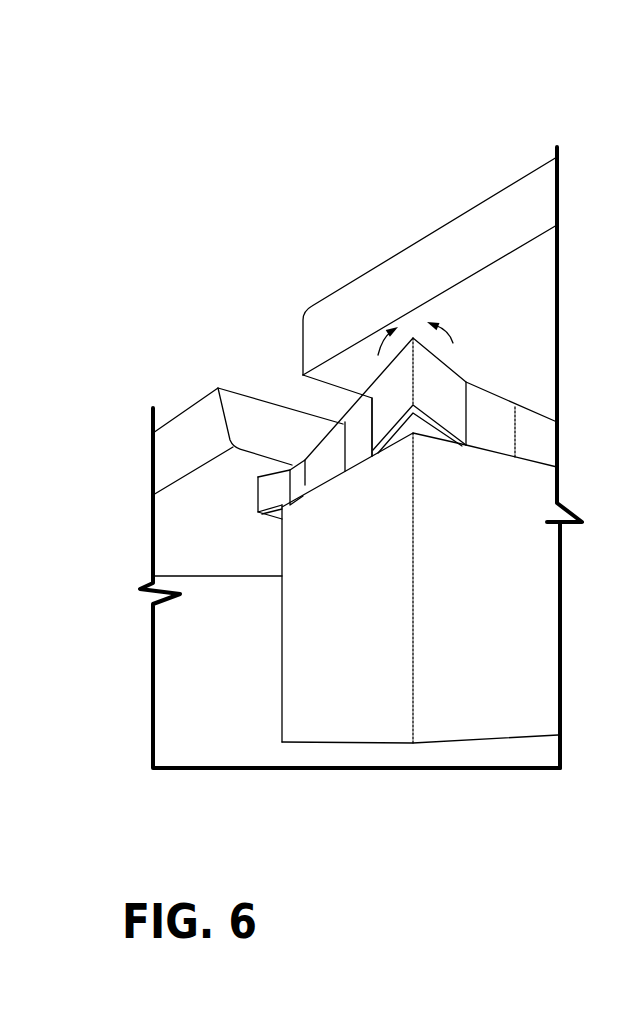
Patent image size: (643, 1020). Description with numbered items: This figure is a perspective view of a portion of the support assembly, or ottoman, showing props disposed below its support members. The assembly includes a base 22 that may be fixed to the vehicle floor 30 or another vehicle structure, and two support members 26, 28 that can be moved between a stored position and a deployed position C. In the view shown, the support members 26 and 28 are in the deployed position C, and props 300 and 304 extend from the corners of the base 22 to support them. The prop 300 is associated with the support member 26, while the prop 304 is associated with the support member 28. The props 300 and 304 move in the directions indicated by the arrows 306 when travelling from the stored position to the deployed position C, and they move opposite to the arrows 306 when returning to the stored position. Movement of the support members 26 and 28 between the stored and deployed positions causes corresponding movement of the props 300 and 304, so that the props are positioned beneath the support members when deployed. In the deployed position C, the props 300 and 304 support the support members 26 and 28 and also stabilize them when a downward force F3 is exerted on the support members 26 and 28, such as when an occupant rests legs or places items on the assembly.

The base 22 is at (467, 670).
The support member 26 is at (188, 428).
The support member 28 is at (430, 265).
The vehicle floor 30 is at (445, 748).
The prop 300 is at (273, 483).
The prop 304 is at (390, 404).
The arrows 306 is at (358, 323).
The downward force F3 is at (520, 148).
The deployed position C is at (465, 201).